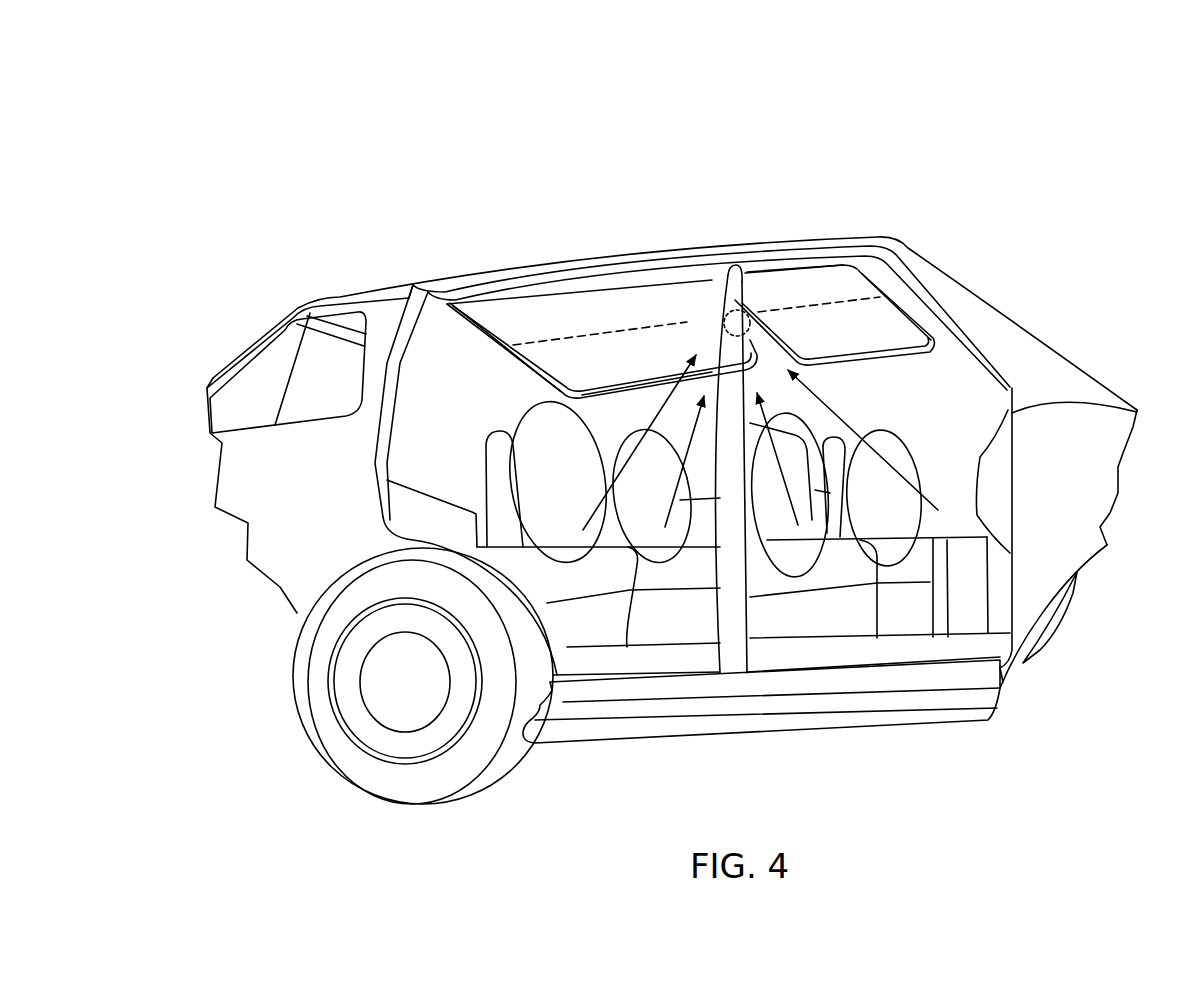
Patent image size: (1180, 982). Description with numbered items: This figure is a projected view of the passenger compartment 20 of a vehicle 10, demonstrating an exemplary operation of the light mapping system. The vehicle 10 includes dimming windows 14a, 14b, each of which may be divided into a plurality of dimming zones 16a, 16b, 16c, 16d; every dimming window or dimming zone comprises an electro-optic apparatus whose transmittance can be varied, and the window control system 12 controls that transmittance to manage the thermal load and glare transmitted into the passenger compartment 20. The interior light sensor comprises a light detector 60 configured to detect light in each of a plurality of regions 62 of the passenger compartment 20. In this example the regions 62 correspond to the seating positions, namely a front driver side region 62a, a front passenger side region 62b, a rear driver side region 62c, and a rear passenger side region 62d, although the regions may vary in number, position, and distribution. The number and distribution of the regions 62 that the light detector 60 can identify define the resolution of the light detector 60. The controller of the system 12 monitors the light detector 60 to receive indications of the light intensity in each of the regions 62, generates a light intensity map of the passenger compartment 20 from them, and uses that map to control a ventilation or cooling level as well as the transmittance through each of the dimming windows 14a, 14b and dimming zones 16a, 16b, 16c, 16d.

The vehicle 10 is at (338, 103).
The window control system 12 is at (675, 378).
The dimming window 14a is at (597, 302).
The dimming window 14b is at (813, 287).
The dimming zone 16a is at (537, 320).
The dimming zone 16b is at (643, 350).
The dimming zone 16c is at (770, 307).
The dimming zone 16d is at (880, 330).
The passenger compartment 20 is at (432, 320).
The light detector 60 is at (742, 302).
The regions 62 is at (781, 441).
The front driver side region 62a is at (897, 457).
The front passenger side region 62b is at (808, 443).
The rear driver side region 62c is at (653, 445).
The rear passenger side region 62d is at (530, 478).